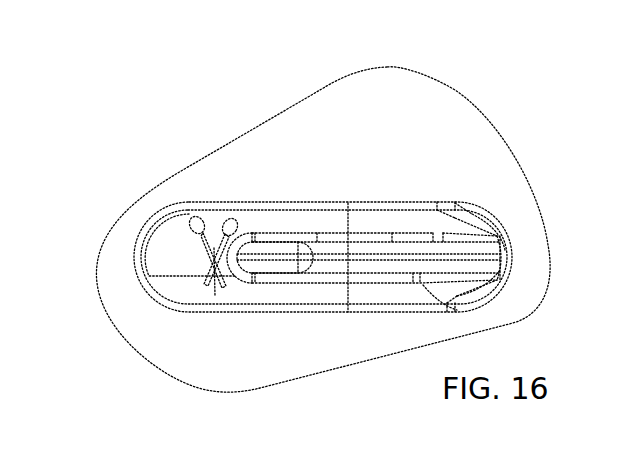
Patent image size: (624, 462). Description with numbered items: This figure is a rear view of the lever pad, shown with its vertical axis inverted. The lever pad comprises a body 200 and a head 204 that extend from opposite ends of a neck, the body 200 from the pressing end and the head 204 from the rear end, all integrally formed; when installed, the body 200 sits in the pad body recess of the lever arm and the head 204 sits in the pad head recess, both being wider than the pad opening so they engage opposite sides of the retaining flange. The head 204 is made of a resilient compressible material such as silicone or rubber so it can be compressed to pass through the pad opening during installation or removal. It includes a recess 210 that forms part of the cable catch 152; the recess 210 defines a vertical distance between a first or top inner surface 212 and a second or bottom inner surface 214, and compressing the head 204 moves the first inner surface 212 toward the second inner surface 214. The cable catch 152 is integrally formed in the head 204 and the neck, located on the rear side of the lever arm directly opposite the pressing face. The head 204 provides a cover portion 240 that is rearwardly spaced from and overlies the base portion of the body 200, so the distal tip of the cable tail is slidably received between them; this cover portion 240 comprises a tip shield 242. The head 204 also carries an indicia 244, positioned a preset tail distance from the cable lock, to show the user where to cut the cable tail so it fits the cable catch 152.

The cable catch 152 is at (278, 232).
The body 200 is at (220, 178).
The head 204 is at (393, 295).
The recess 210 is at (352, 257).
The first inner surface 212 is at (332, 243).
The second inner surface 214 is at (340, 275).
The cover portion 240 is at (178, 282).
The tip shield 242 is at (187, 258).
The indicia 244 is at (205, 242).